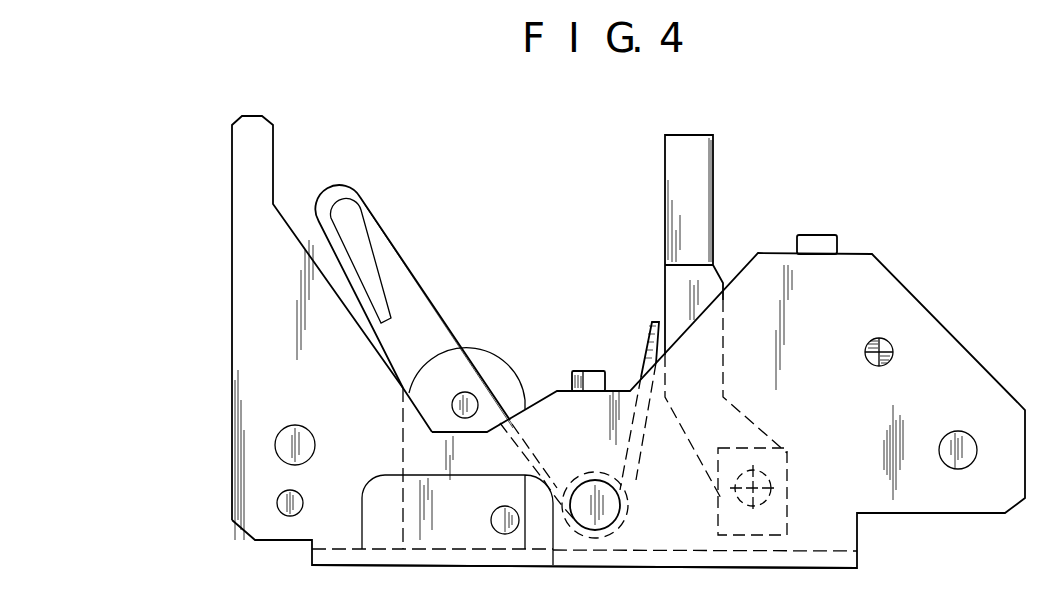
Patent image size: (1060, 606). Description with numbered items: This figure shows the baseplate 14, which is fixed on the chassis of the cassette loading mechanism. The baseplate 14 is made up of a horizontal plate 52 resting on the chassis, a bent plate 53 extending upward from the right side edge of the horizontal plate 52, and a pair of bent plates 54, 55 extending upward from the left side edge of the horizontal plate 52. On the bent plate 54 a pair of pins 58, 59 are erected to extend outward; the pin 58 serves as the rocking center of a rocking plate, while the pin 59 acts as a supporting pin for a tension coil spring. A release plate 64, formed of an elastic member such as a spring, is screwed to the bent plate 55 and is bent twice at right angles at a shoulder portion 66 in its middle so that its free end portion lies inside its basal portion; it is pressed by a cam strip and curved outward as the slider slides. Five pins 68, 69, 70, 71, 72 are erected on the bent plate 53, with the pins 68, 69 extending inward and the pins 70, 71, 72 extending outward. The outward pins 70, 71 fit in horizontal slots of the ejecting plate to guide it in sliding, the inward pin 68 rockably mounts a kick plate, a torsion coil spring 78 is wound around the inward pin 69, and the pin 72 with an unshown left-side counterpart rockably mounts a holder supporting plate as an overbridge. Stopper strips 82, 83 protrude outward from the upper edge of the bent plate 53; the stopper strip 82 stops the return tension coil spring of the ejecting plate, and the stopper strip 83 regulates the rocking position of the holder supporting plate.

The baseplate 14 is at (943, 308).
The horizontal plate 52 is at (490, 560).
The bent plate 53 is at (232, 392).
The bent plate 54 is at (503, 366).
The bent plate 55 is at (790, 476).
The pin 58 is at (455, 400).
The pin 59 is at (491, 519).
The release plate 64 is at (701, 184).
The shoulder portion 66 is at (692, 263).
The pin 68 is at (303, 501).
The pin 69 is at (592, 480).
The pin 70 is at (314, 440).
The pin 71 is at (966, 440).
The pin 72 is at (893, 349).
The torsion coil spring 78 is at (428, 286).
The stopper strip 82 is at (590, 378).
The stopper strip 83 is at (816, 239).